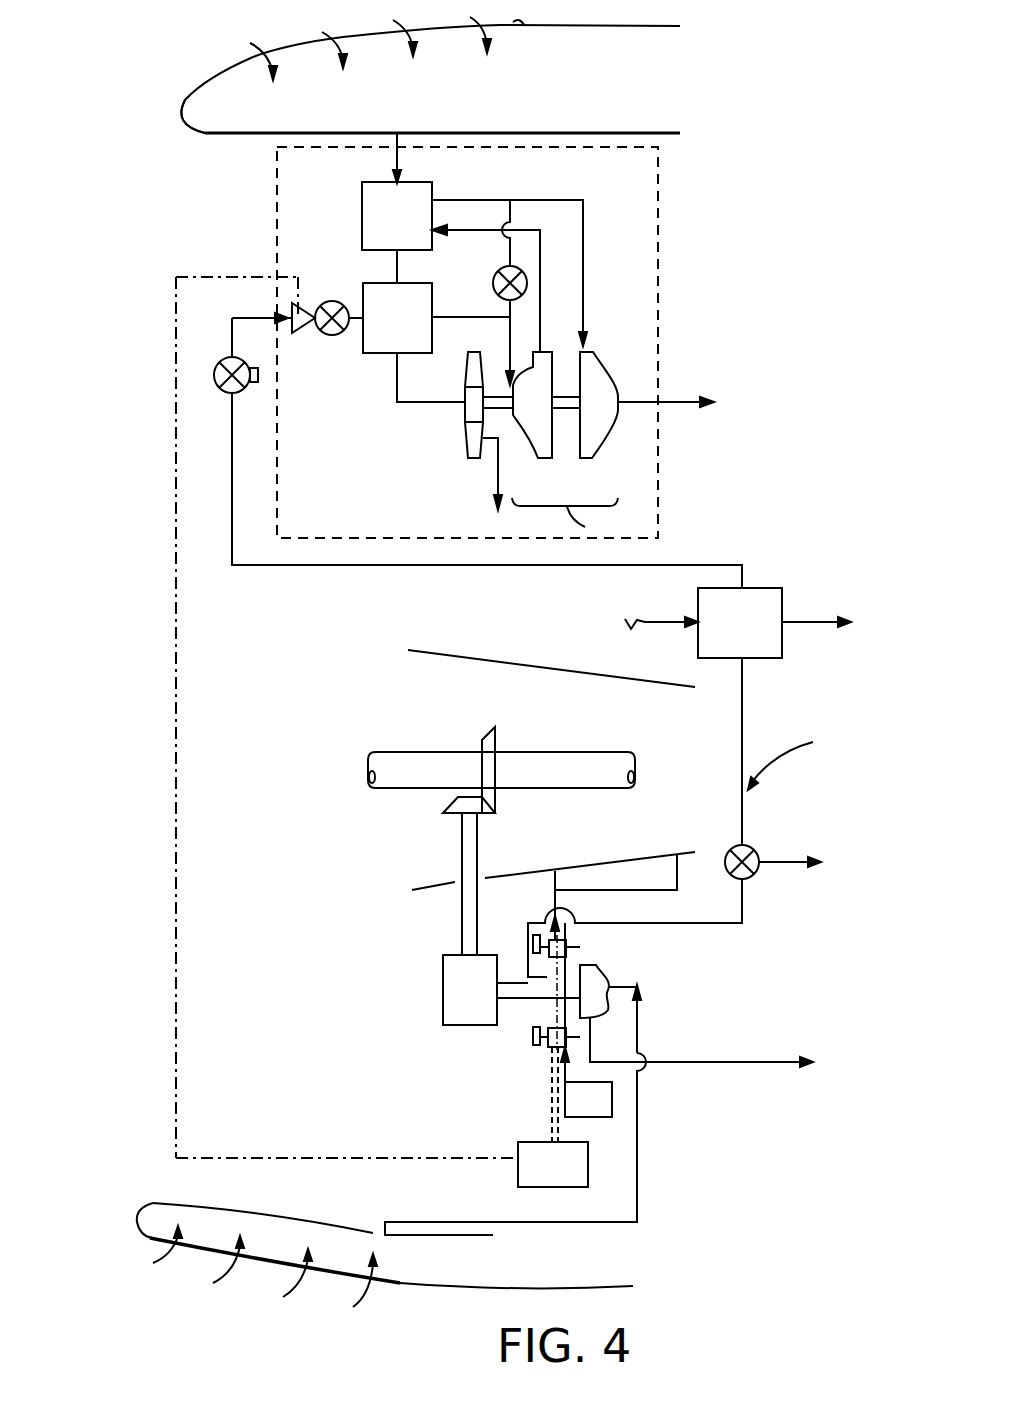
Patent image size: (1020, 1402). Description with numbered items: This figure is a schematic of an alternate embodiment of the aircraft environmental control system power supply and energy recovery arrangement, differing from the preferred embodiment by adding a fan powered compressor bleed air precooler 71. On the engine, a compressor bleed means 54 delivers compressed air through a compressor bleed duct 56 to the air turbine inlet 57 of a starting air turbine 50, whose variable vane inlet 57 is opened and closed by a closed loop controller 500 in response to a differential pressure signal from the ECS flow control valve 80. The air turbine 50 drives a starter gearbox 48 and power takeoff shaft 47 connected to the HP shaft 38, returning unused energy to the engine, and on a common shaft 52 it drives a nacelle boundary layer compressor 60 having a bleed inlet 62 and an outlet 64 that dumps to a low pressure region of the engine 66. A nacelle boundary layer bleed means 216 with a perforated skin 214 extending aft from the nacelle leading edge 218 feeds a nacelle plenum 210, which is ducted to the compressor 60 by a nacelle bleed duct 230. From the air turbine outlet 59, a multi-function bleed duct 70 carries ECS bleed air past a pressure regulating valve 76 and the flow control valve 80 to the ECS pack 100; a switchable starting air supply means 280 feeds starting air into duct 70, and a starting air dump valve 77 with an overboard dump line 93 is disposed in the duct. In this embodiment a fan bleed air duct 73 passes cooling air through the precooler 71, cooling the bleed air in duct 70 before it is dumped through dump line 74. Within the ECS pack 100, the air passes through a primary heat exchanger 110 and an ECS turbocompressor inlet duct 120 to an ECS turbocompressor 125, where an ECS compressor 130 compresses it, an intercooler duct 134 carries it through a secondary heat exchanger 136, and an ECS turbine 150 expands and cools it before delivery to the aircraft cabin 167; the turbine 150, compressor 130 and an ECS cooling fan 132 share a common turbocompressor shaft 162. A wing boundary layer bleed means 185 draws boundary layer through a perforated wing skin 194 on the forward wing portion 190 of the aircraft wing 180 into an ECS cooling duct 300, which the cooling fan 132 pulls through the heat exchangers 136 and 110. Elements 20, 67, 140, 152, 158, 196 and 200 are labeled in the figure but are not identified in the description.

The gas turbine engine 20 is at (483, 658).
The HP shaft 38 is at (568, 752).
The power takeoff shaft 47 is at (478, 837).
The starter gearbox 48 is at (457, 1028).
The starting air turbine 50 is at (537, 990).
The common rotor or shaft 52 is at (542, 1012).
The compressor bleed means 54 is at (620, 867).
The compressor bleed duct 56 is at (558, 897).
The variable vane air turbine inlet 57 is at (565, 955).
The air turbine outlet 59 is at (538, 977).
The nacelle boundary layer compressor 60 is at (603, 970).
The nacelle boundary layer bleed inlet 62 is at (608, 983).
The compressor outlet 64 is at (589, 1020).
The low pressure region of the engine 66 is at (493, 507).
The valve 67 is at (565, 942).
The multi-function bleed duct 70 is at (792, 751).
The compressor bleed air precooler 71 is at (760, 598).
The fan bleed air duct 73 is at (662, 622).
The dump line 74 is at (797, 623).
The pressure regulating valve 76 is at (228, 393).
The starting air dump valve 77 is at (752, 843).
The ECS flow control valve 80 is at (340, 301).
The overboard dump line 93 is at (818, 865).
The ECS pack 100 is at (658, 228).
The primary heat exchanger 110 is at (417, 329).
The ECS turbocompressor inlet duct 120 is at (465, 317).
The ECS turbocompressor 125 is at (570, 518).
The ECS compressor 130 is at (540, 458).
The ECS cooling fan 132 is at (467, 372).
The intercooler duct 134 is at (542, 253).
The secondary heat exchanger 136 is at (417, 228).
The air duct 140 is at (583, 223).
The ECS turbine 150 is at (600, 367).
The turbine inlet duct 152 is at (590, 347).
The turbine exhaust line 158 is at (623, 401).
The common turbocompressor shaft 162 is at (568, 410).
The aircraft cabin 167 is at (705, 407).
The aircraft wing 180 is at (667, 23).
The wing boundary layer bleed means 185 is at (375, 113).
The forward wing portion 190 is at (520, 25).
The perforated wing skin 194 is at (337, 32).
The wing leading edge 196 is at (255, 117).
The engine inlet cowl 200 is at (160, 1207).
The nacelle plenum 210 is at (355, 1250).
The perforated skin 214 is at (242, 1263).
The nacelle boundary layer bleed means 216 is at (283, 1240).
The nacelle leading edge 218 is at (138, 1215).
The nacelle bleed duct 230 is at (465, 1220).
The switchable starting air supply means 280 is at (577, 1103).
The ECS cooling duct 300 is at (410, 156).
The closed loop controller 500 is at (530, 1170).